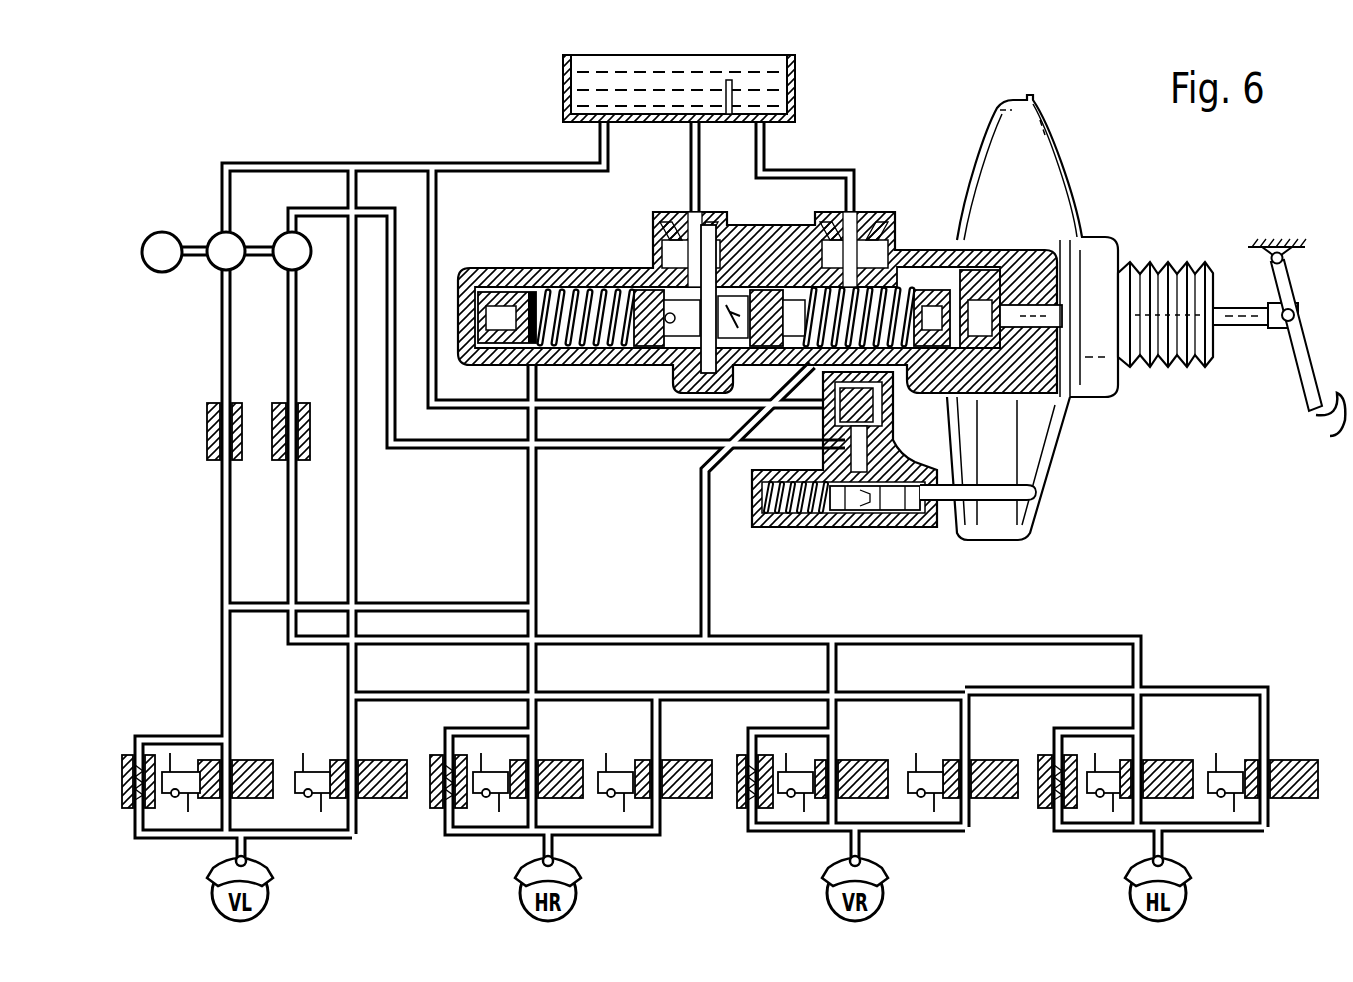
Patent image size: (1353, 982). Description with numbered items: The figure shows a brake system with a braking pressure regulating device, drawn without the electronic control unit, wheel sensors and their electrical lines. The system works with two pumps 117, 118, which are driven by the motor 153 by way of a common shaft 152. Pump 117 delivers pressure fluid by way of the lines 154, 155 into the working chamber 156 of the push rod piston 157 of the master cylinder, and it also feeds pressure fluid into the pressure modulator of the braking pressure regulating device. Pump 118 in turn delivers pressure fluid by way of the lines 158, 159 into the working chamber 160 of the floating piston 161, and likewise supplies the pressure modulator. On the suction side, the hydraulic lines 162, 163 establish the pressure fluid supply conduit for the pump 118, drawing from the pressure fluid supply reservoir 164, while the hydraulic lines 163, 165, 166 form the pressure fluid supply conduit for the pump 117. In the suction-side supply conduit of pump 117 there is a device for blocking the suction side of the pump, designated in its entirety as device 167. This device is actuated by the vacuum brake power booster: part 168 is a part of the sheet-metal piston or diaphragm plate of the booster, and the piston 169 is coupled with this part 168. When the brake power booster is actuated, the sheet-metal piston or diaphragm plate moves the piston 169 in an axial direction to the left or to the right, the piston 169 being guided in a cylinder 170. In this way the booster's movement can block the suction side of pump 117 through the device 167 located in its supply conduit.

The pump 117 is at (214, 240).
The pump 118 is at (280, 240).
The common shaft 152 is at (206, 246).
The motor 153 is at (143, 250).
The line 154 is at (287, 305).
The line 155 is at (700, 548).
The working chamber 156 is at (893, 293).
The push rod piston 157 is at (968, 287).
The line 158 is at (220, 518).
The line 159 is at (538, 505).
The working chamber 160 is at (560, 297).
The floating piston 161 is at (700, 272).
The hydraulic line 162 is at (298, 166).
The hydraulic line 163 is at (478, 166).
The pressure fluid supply reservoir 164 is at (793, 93).
The hydraulic line 165 is at (440, 237).
The hydraulic line 166 is at (385, 330).
The device for blocking the suction side of the pump 167 is at (954, 483).
The part of sheet-metal piston or diaphragm plate 168 is at (1039, 497).
The piston 169 is at (945, 505).
The cylinder 170 is at (793, 512).